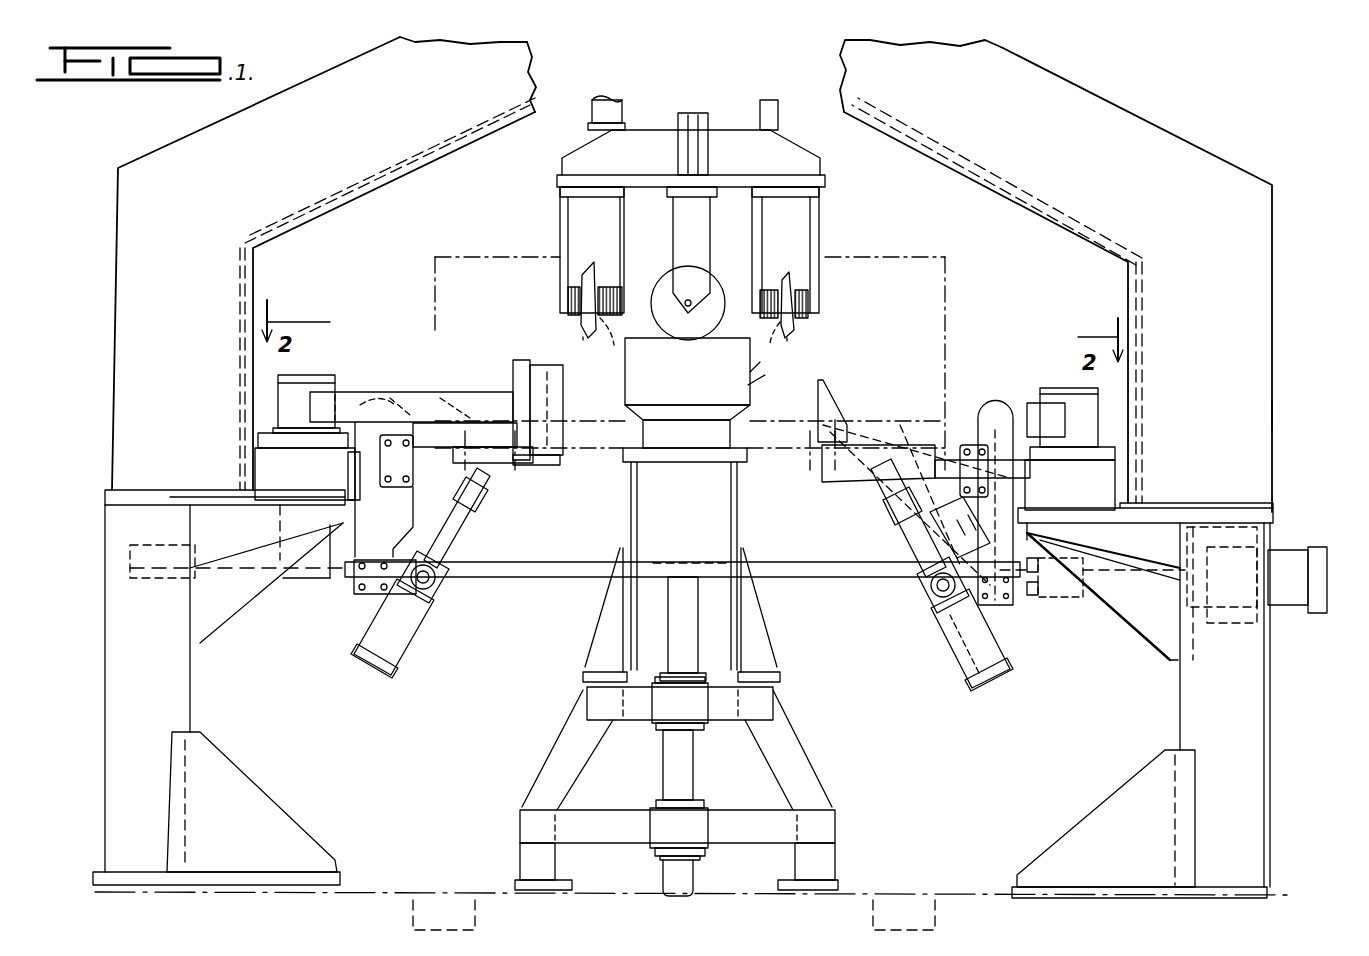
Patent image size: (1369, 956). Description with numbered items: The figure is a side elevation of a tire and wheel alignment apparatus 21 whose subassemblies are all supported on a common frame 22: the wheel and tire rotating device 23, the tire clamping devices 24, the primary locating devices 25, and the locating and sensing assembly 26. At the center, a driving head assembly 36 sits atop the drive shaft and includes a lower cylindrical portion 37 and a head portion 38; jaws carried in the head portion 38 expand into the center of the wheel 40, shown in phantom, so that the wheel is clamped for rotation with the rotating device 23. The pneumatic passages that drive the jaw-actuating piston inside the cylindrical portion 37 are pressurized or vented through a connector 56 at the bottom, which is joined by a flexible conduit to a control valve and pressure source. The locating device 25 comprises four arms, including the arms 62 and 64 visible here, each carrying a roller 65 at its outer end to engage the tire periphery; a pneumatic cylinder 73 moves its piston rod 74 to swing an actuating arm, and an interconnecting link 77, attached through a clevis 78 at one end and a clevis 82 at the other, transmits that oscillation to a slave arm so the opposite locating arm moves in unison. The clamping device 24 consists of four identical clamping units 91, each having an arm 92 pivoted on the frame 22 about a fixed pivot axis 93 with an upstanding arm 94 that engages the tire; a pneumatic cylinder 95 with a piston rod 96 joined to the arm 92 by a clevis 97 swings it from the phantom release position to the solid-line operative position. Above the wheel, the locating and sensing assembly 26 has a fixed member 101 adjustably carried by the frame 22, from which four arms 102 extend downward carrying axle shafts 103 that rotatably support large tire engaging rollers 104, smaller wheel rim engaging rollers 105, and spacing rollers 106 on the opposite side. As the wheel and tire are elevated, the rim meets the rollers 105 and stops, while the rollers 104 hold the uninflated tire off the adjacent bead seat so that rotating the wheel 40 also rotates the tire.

The apparatus 21 is at (1298, 280).
The common frame 22 is at (1278, 415).
The wheel and tire rotating device 23 is at (608, 468).
The tire clamping devices 24 is at (905, 390).
The primary locating devices 25 is at (520, 367).
The locating and sensing assembly 26 is at (855, 288).
The driving head assembly 36 is at (752, 412).
The lower cylindrical portion 37 is at (745, 442).
The head portion 38 is at (760, 372).
The wheel 40 is at (770, 382).
The connector 56 is at (660, 871).
The arm 62 is at (1085, 405).
The arm 64 is at (360, 390).
The roller 65 is at (570, 395).
The pneumatic cylinder 73 is at (1290, 550).
The piston rod 74 is at (1135, 585).
The interconnecting link 77 is at (520, 563).
The clevis 78 is at (1055, 522).
The clevis 82 is at (172, 545).
The clamping unit 91 is at (447, 596).
The arm 92 is at (480, 415).
The fixed pivot axis 93 is at (1000, 420).
The upstanding arm 94 is at (852, 386).
The pneumatic cylinder 95 is at (400, 660).
The piston rod 96 is at (455, 540).
The clevis 97 is at (490, 483).
The fixed member 101 is at (830, 180).
The arm 102 is at (558, 200).
The axle shaft 103 is at (688, 306).
The tire engaging roller 104 is at (585, 275).
The wheel rim engaging roller 105 is at (605, 292).
The spacing roller 106 is at (576, 300).